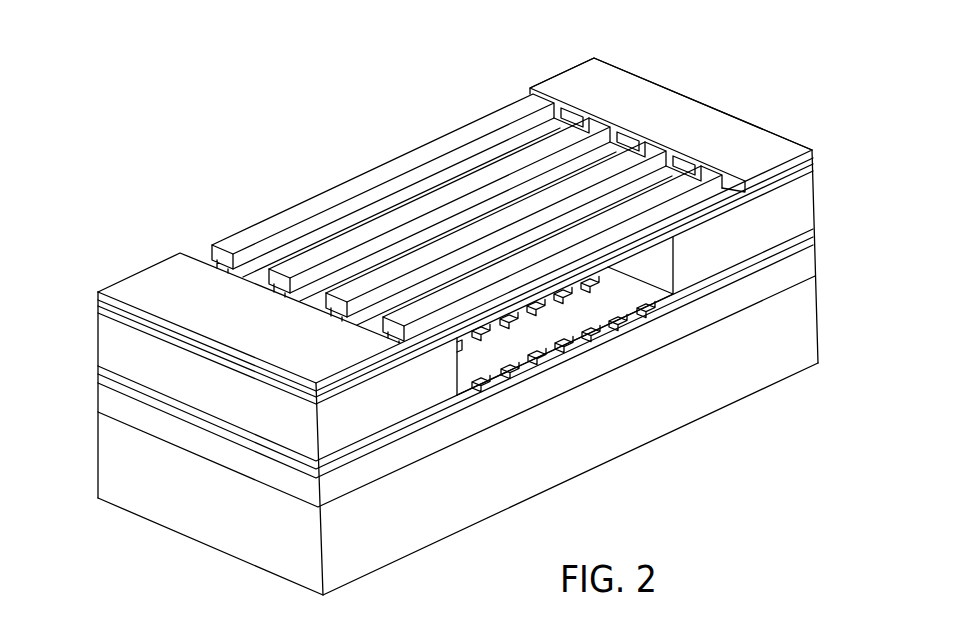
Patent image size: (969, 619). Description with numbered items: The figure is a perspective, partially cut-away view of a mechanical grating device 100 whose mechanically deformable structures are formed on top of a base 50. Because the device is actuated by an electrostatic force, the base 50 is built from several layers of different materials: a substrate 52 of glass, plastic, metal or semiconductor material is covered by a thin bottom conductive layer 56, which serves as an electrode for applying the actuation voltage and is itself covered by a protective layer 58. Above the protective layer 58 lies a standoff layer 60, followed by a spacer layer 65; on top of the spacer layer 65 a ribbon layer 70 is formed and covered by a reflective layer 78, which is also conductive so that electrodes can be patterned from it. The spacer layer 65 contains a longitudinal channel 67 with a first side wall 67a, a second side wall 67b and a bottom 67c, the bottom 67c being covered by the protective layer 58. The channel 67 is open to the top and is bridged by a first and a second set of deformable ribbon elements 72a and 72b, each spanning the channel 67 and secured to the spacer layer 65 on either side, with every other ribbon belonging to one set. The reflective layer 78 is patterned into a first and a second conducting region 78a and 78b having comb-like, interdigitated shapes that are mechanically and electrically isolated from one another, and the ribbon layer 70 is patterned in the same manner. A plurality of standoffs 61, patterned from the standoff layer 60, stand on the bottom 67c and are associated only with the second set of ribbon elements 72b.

The mechanical grating device 100 is at (468, 77).
The base 50 is at (223, 520).
The substrate 52 is at (482, 502).
The bottom conductive layer 56 is at (108, 405).
The protective layer 58 is at (98, 383).
The standoff layer 60 is at (100, 369).
The standoffs 61 is at (641, 311).
The spacer layer 65 is at (107, 347).
The longitudinal channel 67 is at (599, 303).
The first side wall 67a is at (462, 367).
The second side wall 67b is at (676, 268).
The bottom 67c is at (564, 329).
The ribbon layer 70 is at (100, 306).
The first set of deformable ribbon elements 72a is at (480, 223).
The second set of deformable ribbon elements 72b is at (418, 287).
The reflective layer 78 is at (98, 291).
The first conducting region 78a is at (605, 88).
The second conducting region 78b is at (160, 288).